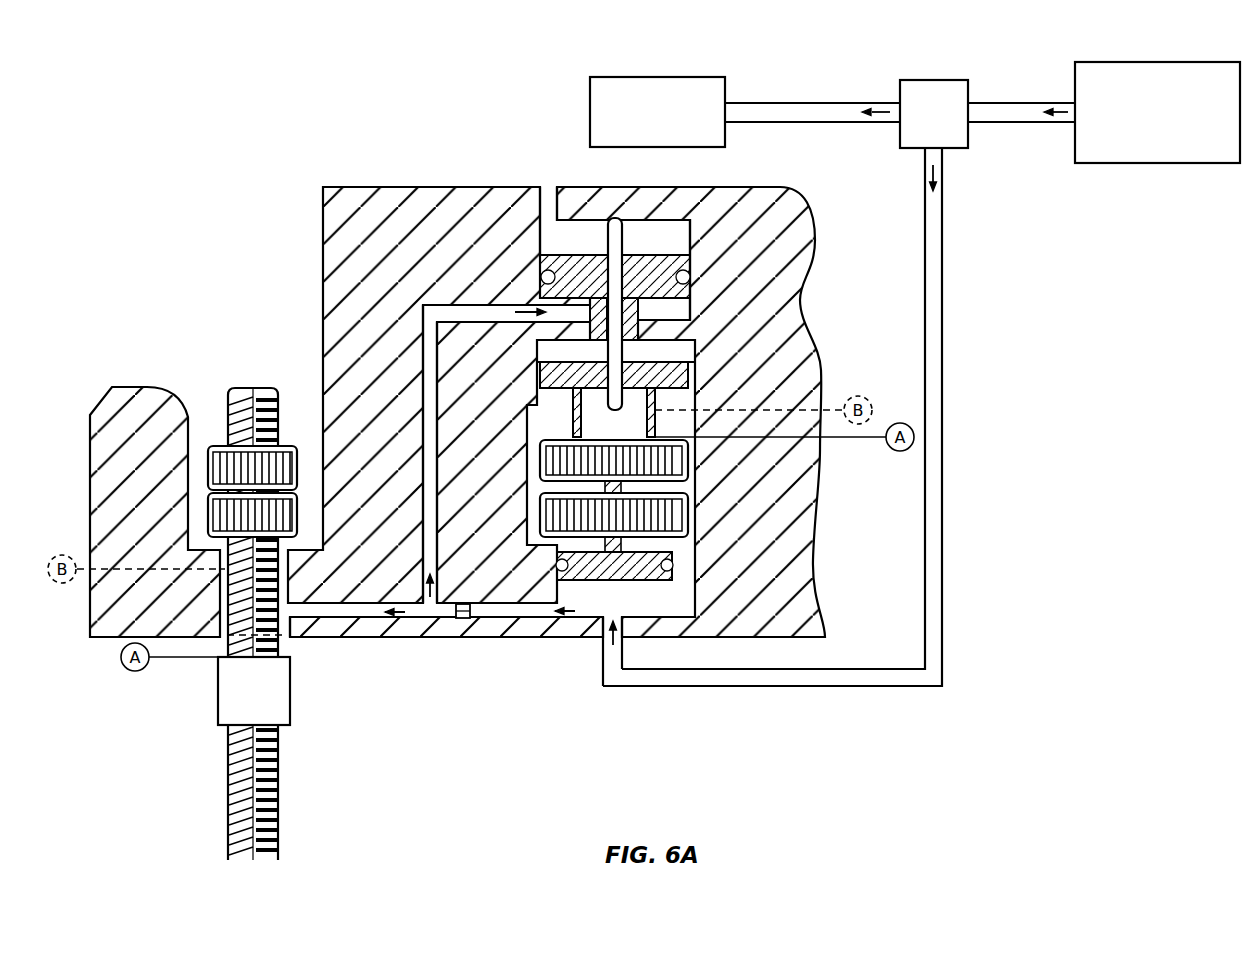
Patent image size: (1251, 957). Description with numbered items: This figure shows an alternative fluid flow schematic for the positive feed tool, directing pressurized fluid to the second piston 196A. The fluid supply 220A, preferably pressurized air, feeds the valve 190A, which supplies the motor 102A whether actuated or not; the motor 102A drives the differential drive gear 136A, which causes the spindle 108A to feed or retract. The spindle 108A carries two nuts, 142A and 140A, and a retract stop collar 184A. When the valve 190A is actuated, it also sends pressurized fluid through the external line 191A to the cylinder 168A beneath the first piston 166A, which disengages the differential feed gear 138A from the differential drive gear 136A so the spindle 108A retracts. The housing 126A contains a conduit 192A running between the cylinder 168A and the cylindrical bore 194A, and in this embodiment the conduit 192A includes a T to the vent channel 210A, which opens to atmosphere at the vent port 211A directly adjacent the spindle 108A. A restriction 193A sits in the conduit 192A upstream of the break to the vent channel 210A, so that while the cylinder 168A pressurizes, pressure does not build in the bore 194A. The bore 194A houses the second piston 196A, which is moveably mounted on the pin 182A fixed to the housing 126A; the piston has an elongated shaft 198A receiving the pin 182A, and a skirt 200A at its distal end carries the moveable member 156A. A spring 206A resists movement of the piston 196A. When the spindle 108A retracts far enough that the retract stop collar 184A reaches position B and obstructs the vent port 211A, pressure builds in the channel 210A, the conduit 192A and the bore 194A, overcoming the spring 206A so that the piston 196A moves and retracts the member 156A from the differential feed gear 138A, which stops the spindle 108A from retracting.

The motor 102A is at (688, 77).
The valve 190A is at (935, 80).
The fluid supply 220A is at (1195, 62).
The housing 126A is at (388, 200).
The spring 206A is at (548, 193).
The pin 182A is at (615, 218).
The second piston 196A is at (668, 265).
The cylindrical bore 194A is at (667, 307).
The elongated shaft 198A is at (637, 335).
The skirt 200A is at (680, 373).
The conduit 192A is at (432, 329).
The moveable member 156A is at (562, 427).
The spindle 108A is at (243, 398).
The upper nut 142A is at (212, 470).
The lower nut 140A is at (212, 510).
The differential feed gear 138A is at (655, 463).
The differential drive gear 136A is at (652, 518).
The first piston 166A is at (665, 555).
The external line 191A is at (938, 577).
The vent port 211A is at (283, 623).
The vent channel 210A is at (358, 610).
The restriction 193A is at (465, 618).
The cylinder 168A is at (598, 612).
The retract stop collar 184A is at (220, 675).